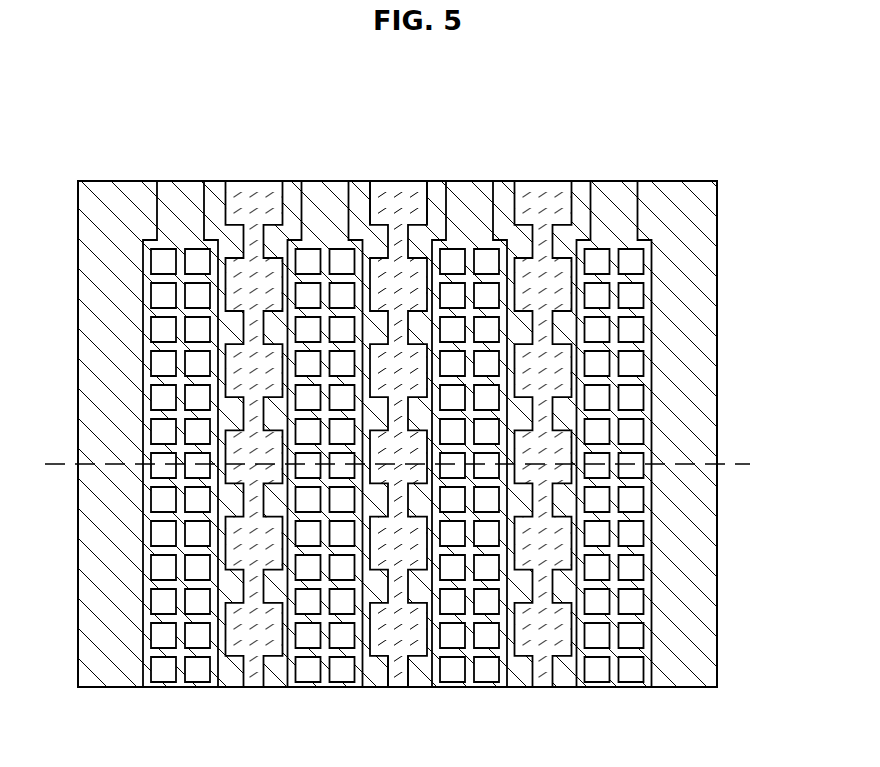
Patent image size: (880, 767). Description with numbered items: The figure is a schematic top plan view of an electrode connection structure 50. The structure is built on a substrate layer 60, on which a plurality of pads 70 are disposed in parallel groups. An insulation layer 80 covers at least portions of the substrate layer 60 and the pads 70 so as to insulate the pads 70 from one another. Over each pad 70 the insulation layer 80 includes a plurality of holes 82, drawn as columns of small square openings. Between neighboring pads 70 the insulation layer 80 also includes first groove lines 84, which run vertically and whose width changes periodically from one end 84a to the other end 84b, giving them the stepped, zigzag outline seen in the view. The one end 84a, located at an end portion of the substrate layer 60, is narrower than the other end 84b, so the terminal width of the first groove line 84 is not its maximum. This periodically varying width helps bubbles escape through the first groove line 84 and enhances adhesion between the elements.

The electrode connection structure 50 is at (110, 84).
The substrate layer 60 is at (722, 580).
The pad 70 is at (658, 671).
The insulation layer 80 is at (88, 258).
The hole 82 is at (636, 329).
The first groove line 84 is at (416, 207).
The one end of the first groove line 84a is at (400, 677).
The other end of the first groove line 84b is at (387, 181).